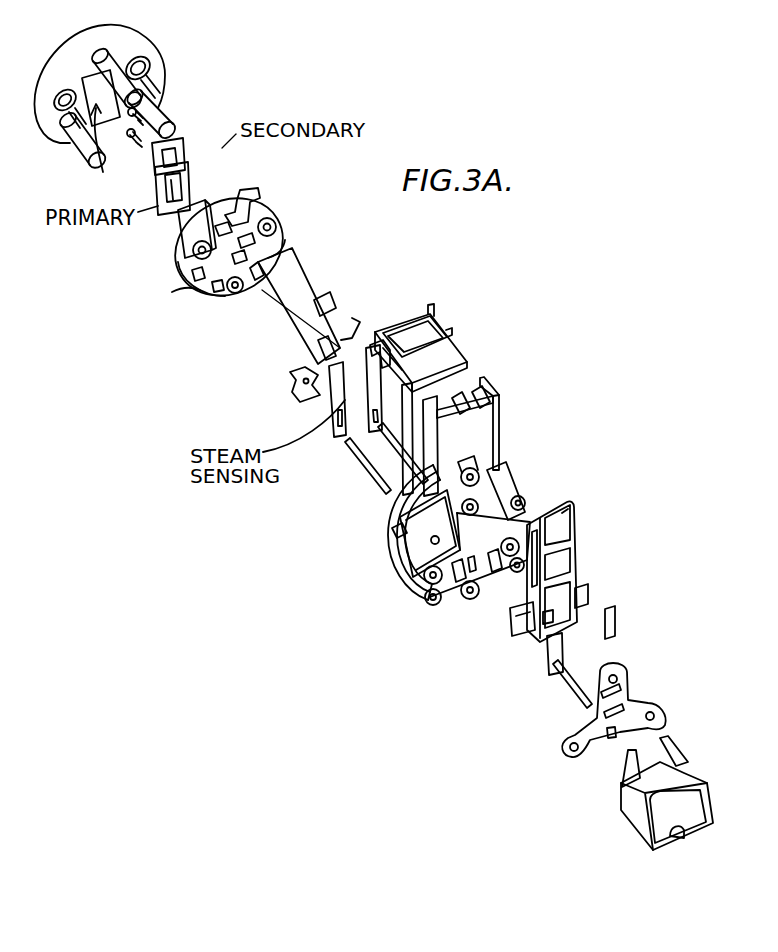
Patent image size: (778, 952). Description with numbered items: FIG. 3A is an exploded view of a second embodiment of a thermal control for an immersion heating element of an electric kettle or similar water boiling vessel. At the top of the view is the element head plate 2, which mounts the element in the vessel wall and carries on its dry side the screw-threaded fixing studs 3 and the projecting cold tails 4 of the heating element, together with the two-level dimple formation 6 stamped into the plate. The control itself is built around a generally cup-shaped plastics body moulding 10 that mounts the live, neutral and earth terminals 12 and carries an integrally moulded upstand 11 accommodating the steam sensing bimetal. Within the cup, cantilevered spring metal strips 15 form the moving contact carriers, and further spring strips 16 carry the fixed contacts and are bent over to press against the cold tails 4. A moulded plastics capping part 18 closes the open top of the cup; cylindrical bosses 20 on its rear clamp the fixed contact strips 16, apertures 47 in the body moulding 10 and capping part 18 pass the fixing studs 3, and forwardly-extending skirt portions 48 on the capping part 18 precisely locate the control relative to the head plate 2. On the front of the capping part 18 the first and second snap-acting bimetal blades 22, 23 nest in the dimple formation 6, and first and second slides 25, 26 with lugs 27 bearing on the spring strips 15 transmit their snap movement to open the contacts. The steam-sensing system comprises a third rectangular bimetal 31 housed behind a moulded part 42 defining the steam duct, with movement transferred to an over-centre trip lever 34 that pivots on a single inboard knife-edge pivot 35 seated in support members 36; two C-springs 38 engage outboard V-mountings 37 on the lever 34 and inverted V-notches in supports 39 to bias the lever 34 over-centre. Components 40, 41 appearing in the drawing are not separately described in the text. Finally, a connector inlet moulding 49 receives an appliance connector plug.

The head plate 2 is at (140, 35).
The screw-threaded fixing studs 3 is at (100, 52).
The cold tails 4 is at (158, 92).
The two-level dimple formation 6 is at (104, 174).
The body moulding 10 is at (388, 548).
The upstand 11 is at (498, 450).
The terminals 12 is at (378, 465).
The spring metal strip 15 is at (330, 405).
The fixed contact-carrying spring strips 16 is at (292, 378).
The moulded plastics capping part 18 is at (255, 222).
The cylindrical bosses 20 is at (276, 226).
The first bimetal blade 22 is at (185, 150).
The second bimetal blade 23 is at (190, 175).
The first slide 25 is at (285, 285).
The second slide 26 is at (318, 342).
The lugs 27 is at (345, 318).
The third bimetal 31 is at (432, 395).
The over-centre trip lever 34 is at (578, 575).
The knife-edge pivot 35 is at (574, 519).
The support members 36 is at (496, 410).
The V-mountings 37 is at (590, 590).
The C-springs 38 is at (616, 618).
The supports 39 is at (504, 484).
The tab 40 is at (556, 620).
The window 41 is at (332, 300).
The moulded part 42 is at (440, 318).
The apertures 47 is at (235, 190).
The skirt portions 48 is at (180, 230).
The connector inlet moulding 49 is at (628, 805).